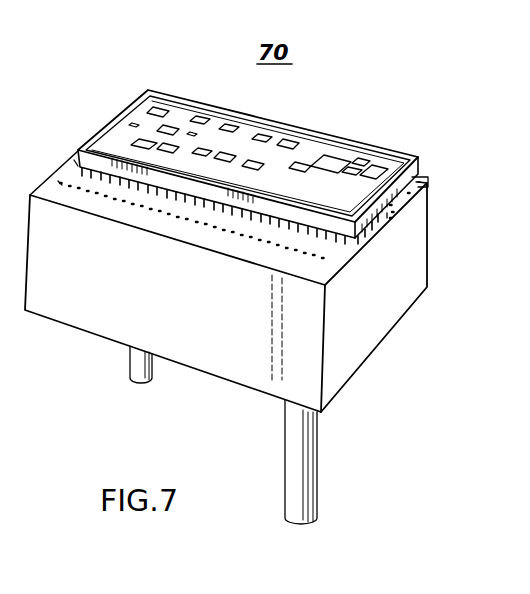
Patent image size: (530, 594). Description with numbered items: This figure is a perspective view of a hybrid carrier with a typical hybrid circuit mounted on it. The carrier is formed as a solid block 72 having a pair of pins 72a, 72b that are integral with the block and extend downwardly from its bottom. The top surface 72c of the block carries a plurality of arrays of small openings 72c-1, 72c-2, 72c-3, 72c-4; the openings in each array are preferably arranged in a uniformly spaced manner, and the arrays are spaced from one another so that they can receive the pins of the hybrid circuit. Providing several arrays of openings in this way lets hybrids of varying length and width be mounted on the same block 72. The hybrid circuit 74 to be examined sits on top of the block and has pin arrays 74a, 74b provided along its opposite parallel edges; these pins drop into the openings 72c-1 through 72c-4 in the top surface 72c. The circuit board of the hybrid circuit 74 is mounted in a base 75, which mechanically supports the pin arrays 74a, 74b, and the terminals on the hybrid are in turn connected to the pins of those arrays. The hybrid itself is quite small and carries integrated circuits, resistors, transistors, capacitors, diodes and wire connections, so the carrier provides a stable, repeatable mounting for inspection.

The solid block 72 is at (100, 297).
The pin 72a is at (128, 370).
The pin 72b is at (315, 457).
The top surface 72c is at (415, 180).
The array of small openings 72c-1 is at (418, 187).
The array of small openings 72c-2 is at (387, 214).
The array of small openings 72c-3 is at (74, 163).
The array of small openings 72c-4 is at (58, 182).
The hybrid circuit 74 is at (248, 172).
The pin array 74a is at (410, 194).
The pin array 74b is at (267, 238).
The base 75 is at (325, 131).